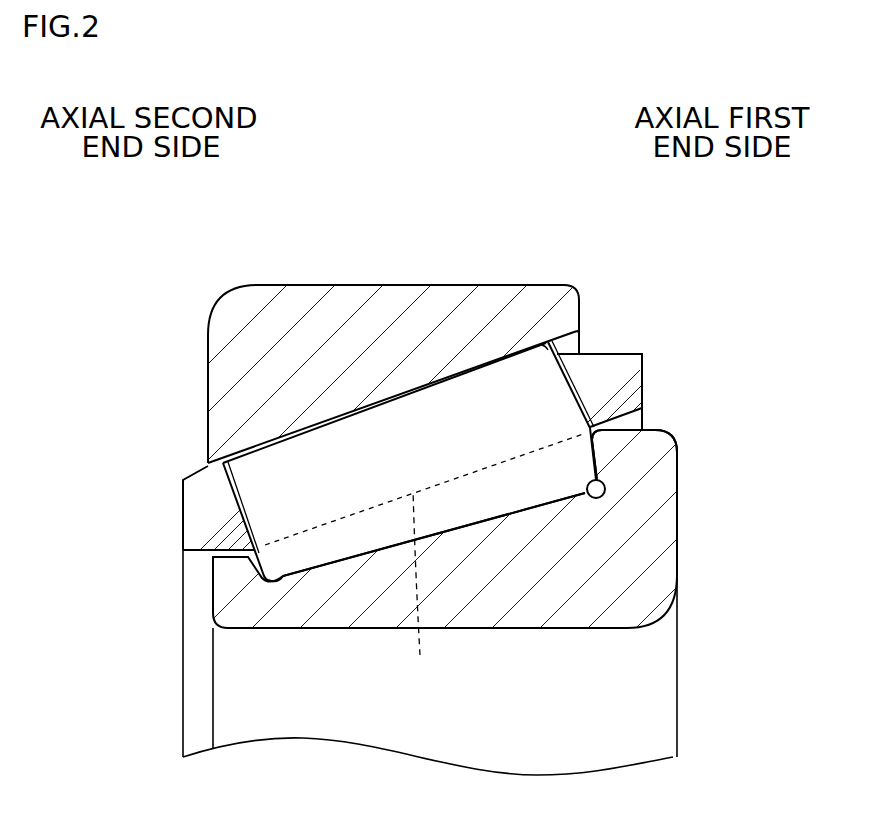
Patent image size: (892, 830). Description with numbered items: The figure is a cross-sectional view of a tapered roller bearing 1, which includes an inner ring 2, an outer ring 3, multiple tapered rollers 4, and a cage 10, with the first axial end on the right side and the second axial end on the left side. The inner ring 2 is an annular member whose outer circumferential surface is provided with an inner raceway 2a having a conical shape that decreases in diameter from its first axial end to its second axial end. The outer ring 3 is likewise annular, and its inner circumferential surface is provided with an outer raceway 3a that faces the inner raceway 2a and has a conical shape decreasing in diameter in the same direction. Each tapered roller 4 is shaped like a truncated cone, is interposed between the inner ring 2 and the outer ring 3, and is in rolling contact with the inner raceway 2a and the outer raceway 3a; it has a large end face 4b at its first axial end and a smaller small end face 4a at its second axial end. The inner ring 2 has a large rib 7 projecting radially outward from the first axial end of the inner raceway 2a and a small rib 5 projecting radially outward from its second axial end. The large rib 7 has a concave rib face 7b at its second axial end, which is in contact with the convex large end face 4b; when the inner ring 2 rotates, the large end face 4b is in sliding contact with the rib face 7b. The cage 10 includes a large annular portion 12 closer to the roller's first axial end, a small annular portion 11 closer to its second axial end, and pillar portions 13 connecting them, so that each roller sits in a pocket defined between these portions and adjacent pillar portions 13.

The tapered roller bearing 1 is at (614, 258).
The inner ring 2 is at (479, 630).
The inner raceway 2a is at (368, 545).
The outer ring 3 is at (308, 284).
The outer raceway 3a is at (417, 392).
The tapered roller 4 is at (265, 446).
The small end face 4a is at (262, 578).
The large end face 4b is at (595, 467).
The small rib 5 is at (227, 583).
The large rib 7 is at (660, 465).
The rib face 7b is at (593, 468).
The cage 10 is at (648, 372).
The small annular portion 11 is at (183, 515).
The large annular portion 12 is at (643, 353).
The pillar portion 13 is at (420, 586).